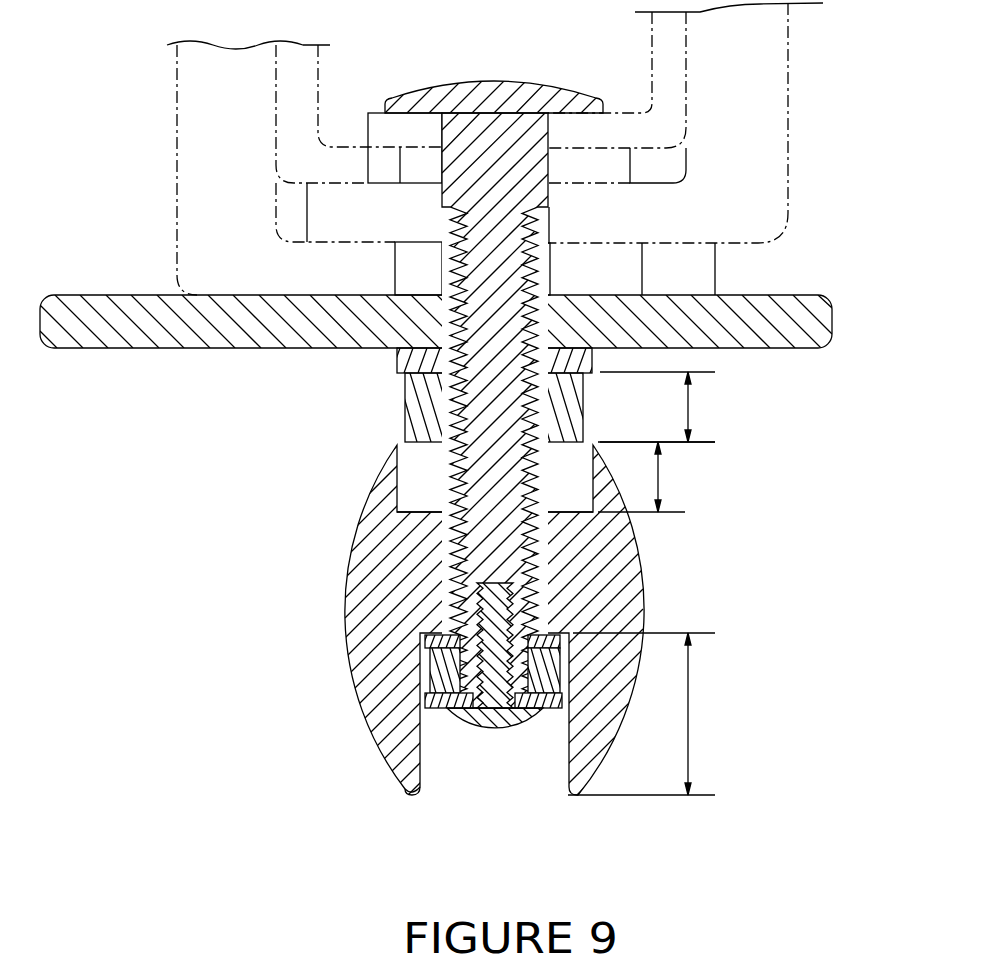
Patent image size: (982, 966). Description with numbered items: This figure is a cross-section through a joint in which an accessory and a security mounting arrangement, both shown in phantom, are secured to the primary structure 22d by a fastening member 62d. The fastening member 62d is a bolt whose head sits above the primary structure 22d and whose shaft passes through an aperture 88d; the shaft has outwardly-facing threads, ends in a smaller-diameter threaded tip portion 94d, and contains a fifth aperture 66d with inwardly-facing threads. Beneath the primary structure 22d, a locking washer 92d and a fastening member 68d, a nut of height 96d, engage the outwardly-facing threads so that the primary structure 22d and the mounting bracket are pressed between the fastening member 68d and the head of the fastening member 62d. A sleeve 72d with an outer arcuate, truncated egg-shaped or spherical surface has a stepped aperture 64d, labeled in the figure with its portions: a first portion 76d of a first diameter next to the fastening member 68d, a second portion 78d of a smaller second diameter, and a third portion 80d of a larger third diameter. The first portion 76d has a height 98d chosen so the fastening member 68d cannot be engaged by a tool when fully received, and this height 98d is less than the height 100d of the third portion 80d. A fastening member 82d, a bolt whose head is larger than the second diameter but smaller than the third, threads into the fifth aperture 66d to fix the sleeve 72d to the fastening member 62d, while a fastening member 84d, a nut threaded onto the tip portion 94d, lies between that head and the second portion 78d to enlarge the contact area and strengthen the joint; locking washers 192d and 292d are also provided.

The primary structure 22d is at (181, 328).
The fastening member 62d is at (478, 98).
The aperture 88d is at (510, 297).
The locking washer 92d is at (415, 359).
The fastening member 68d is at (418, 394).
The clamp assembly 64d is at (493, 645).
The second portion 78d is at (341, 620).
The first portion 76d is at (593, 487).
The third portion 80d is at (420, 763).
The sleeve 72d is at (370, 565).
The fifth aperture 66d is at (497, 583).
The locking washer 192d is at (435, 648).
The smaller-diameter tip portion 94d is at (440, 665).
The fastening member 84d is at (440, 680).
The locking washer 292d is at (470, 712).
The fastening member 82d is at (445, 715).
The height 96d is at (690, 405).
The height 98d is at (660, 478).
The height 100d is at (690, 714).